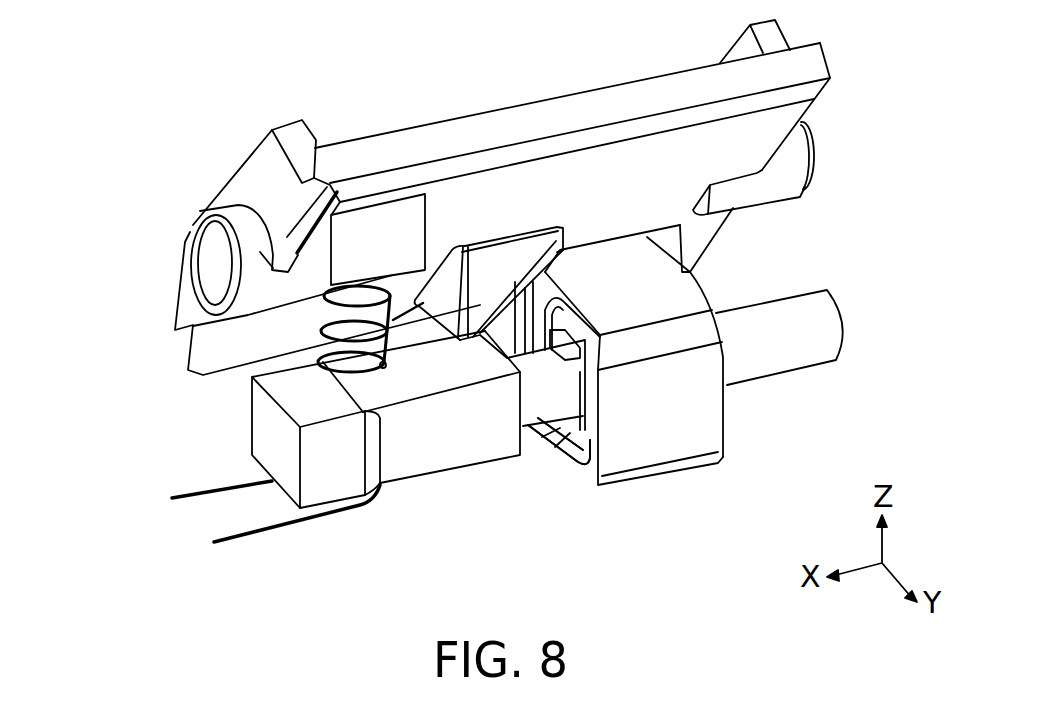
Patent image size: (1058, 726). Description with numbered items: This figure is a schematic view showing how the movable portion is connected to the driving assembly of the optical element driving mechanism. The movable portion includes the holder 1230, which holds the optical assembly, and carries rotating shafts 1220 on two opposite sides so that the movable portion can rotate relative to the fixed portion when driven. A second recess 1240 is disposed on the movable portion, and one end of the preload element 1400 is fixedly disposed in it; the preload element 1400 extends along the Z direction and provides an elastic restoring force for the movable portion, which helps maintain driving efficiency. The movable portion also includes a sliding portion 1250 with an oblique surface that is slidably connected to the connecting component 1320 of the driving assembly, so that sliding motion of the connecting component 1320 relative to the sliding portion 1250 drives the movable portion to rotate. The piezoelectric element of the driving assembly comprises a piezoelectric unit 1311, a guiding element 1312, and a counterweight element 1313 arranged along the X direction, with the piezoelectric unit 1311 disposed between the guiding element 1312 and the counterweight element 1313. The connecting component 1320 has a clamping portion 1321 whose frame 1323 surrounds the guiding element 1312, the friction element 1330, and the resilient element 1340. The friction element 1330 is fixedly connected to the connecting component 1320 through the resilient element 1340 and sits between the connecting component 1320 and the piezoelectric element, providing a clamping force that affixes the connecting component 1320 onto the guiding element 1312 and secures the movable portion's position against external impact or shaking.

The rotating shaft 1220 is at (210, 262).
The holder 1230 is at (260, 168).
The second recess 1240 is at (322, 256).
The sliding portion 1250 is at (510, 267).
The preload element 1400 is at (352, 366).
The counterweight element 1313 is at (270, 452).
The piezoelectric unit 1311 is at (403, 453).
The guiding element 1312 is at (780, 355).
The connecting component 1320 is at (657, 444).
The clamping portion 1321 is at (587, 477).
The frame 1323 is at (575, 513).
The friction element 1330 is at (543, 430).
The resilient element 1340 is at (540, 440).